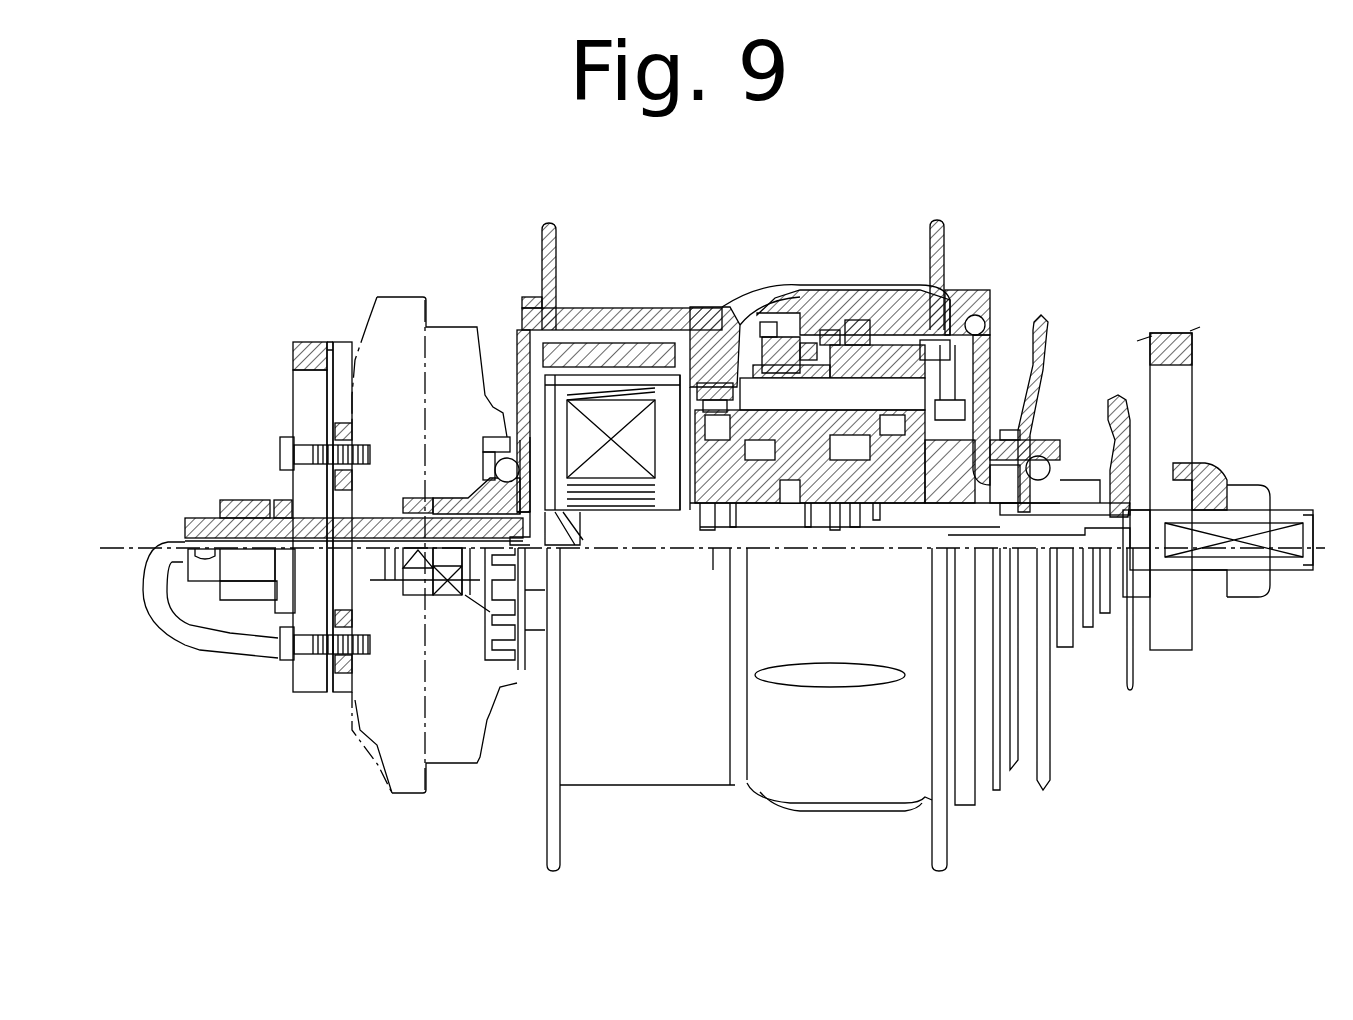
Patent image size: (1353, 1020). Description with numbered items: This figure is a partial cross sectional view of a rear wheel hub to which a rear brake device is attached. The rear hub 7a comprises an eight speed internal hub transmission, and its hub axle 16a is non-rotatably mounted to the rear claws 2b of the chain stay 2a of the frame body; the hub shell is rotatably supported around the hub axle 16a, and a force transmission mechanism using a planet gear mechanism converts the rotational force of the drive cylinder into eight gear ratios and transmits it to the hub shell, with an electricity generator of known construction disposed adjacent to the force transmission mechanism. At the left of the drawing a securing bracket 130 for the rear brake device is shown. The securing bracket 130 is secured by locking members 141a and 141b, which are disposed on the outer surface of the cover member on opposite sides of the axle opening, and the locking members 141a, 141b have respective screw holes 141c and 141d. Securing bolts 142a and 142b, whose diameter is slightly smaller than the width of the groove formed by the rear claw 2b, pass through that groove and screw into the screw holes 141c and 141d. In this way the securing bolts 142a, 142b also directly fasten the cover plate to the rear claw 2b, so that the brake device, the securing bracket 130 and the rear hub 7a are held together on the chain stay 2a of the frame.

The rear hub 7a is at (778, 272).
The securing bracket 130 is at (412, 295).
The locking member 141a is at (348, 345).
The locking member 141b is at (347, 680).
The screw hole 141c is at (330, 345).
The screw hole 141d is at (387, 793).
The securing bolt 142a is at (283, 452).
The securing bolt 142b is at (282, 651).
The chain stay 2a is at (293, 350).
The rear claw 2b is at (300, 388).
The hub axle 16a is at (185, 524).